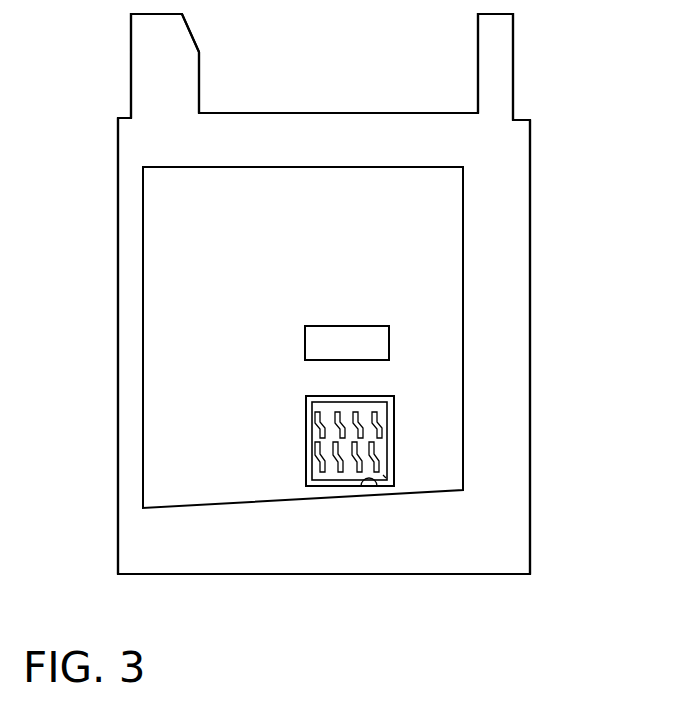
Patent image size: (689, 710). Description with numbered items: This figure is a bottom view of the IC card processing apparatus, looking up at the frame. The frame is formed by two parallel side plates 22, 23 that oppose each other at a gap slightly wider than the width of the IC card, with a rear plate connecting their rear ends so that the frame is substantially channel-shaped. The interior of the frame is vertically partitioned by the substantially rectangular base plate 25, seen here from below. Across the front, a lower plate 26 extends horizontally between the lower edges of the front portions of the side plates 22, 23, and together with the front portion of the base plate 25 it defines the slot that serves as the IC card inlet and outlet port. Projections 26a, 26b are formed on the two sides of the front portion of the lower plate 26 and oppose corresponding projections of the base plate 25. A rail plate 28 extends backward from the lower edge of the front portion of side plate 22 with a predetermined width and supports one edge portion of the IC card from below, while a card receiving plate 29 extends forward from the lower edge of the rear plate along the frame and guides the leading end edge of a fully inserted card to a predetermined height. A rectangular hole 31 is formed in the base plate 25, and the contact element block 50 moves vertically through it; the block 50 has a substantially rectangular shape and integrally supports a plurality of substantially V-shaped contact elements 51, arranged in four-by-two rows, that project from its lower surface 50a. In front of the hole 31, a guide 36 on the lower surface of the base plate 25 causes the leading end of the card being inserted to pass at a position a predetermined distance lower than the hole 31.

The side plate 22 is at (530, 364).
The side plate 23 is at (120, 347).
The base plate 25 is at (152, 232).
The lower plate 26 is at (341, 127).
The projection 26a is at (137, 65).
The projection 26b is at (505, 71).
The rail plate 28 is at (513, 260).
The card receiving plate 29 is at (314, 540).
The rectangular hole 31 is at (377, 484).
The guide 36 is at (306, 346).
The contact element block 50 is at (306, 486).
The lower surface 50a is at (384, 478).
The contact elements 51 is at (313, 446).